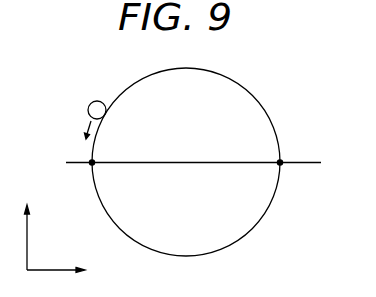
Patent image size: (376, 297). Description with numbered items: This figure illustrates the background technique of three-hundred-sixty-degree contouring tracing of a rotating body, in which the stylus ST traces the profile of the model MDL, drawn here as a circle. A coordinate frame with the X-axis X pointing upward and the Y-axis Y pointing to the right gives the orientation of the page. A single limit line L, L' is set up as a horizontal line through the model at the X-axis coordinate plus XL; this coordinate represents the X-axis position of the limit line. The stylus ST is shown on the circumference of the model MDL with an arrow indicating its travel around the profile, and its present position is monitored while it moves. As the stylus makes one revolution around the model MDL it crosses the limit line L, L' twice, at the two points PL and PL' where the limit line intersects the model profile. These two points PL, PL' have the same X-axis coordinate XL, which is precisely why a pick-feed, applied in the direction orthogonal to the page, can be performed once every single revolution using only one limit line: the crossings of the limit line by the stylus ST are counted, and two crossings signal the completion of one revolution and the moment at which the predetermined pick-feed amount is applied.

The model MDL is at (254, 116).
The limit line L is at (187, 155).
The limit line L' is at (312, 148).
The point PL is at (79, 175).
The point PL' is at (263, 175).
The X-axis coordinate XL is at (307, 178).
The stylus ST is at (97, 101).
The X-axis X is at (23, 229).
The Y-axis Y is at (64, 274).